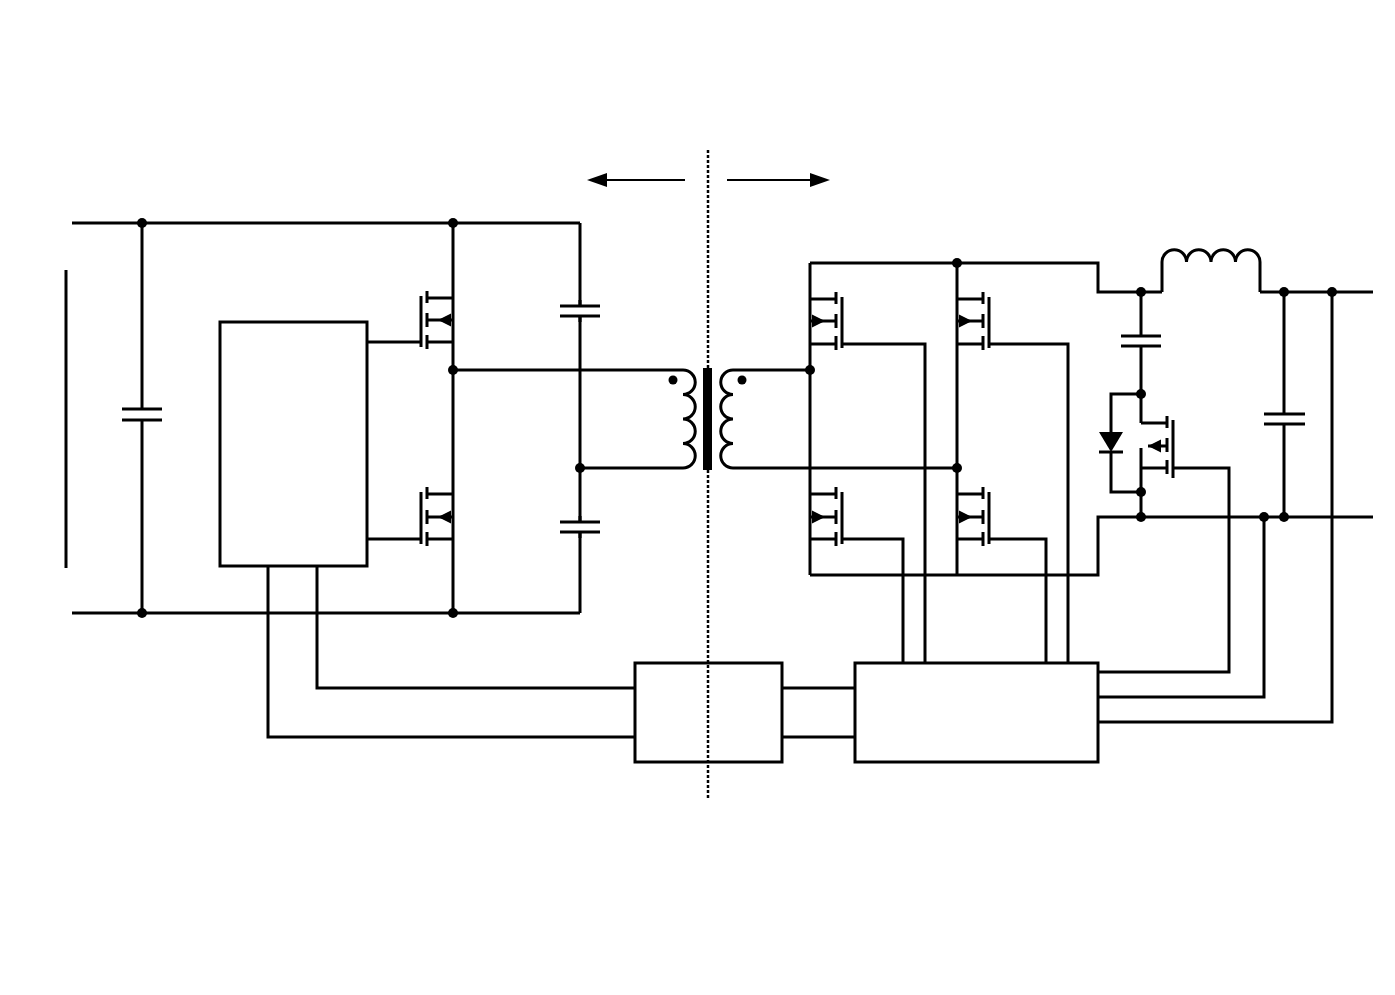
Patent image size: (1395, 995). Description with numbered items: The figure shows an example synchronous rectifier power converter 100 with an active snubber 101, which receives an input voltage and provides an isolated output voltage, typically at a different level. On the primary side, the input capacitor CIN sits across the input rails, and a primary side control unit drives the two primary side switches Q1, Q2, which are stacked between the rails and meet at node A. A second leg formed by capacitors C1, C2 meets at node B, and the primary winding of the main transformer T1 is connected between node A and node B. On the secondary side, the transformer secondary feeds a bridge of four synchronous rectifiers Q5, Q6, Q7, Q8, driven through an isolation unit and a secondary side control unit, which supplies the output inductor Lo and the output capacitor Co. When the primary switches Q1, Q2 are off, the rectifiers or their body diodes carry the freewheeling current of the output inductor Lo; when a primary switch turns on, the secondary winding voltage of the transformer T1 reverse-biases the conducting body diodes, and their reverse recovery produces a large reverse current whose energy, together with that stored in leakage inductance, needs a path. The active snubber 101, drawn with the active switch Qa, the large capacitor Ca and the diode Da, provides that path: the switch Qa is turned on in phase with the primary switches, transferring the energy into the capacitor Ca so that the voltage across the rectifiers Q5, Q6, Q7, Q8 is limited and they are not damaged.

The synchronous rectifier power converter 100 is at (965, 55).
The active snubber 101 is at (1137, 560).
The input capacitor CIN is at (157, 418).
The primary side switch Q1 is at (410, 292).
The primary side switch Q2 is at (410, 489).
The primary side capacitor C1 is at (597, 311).
The primary side capacitor C2 is at (597, 526).
The node A is at (565, 381).
The node B is at (629, 456).
The main transformer T1 is at (708, 405).
The synchronous rectifier Q5 is at (867, 449).
The synchronous rectifier Q6 is at (856, 548).
The synchronous rectifier Q7 is at (1012, 449).
The synchronous rectifier Q8 is at (1001, 548).
The output inductor Lo is at (1192, 271).
The output capacitor Co is at (1277, 404).
The snubber capacitor Ca is at (1157, 343).
The snubber diode Da is at (1108, 443).
The active switch Qa is at (1163, 536).